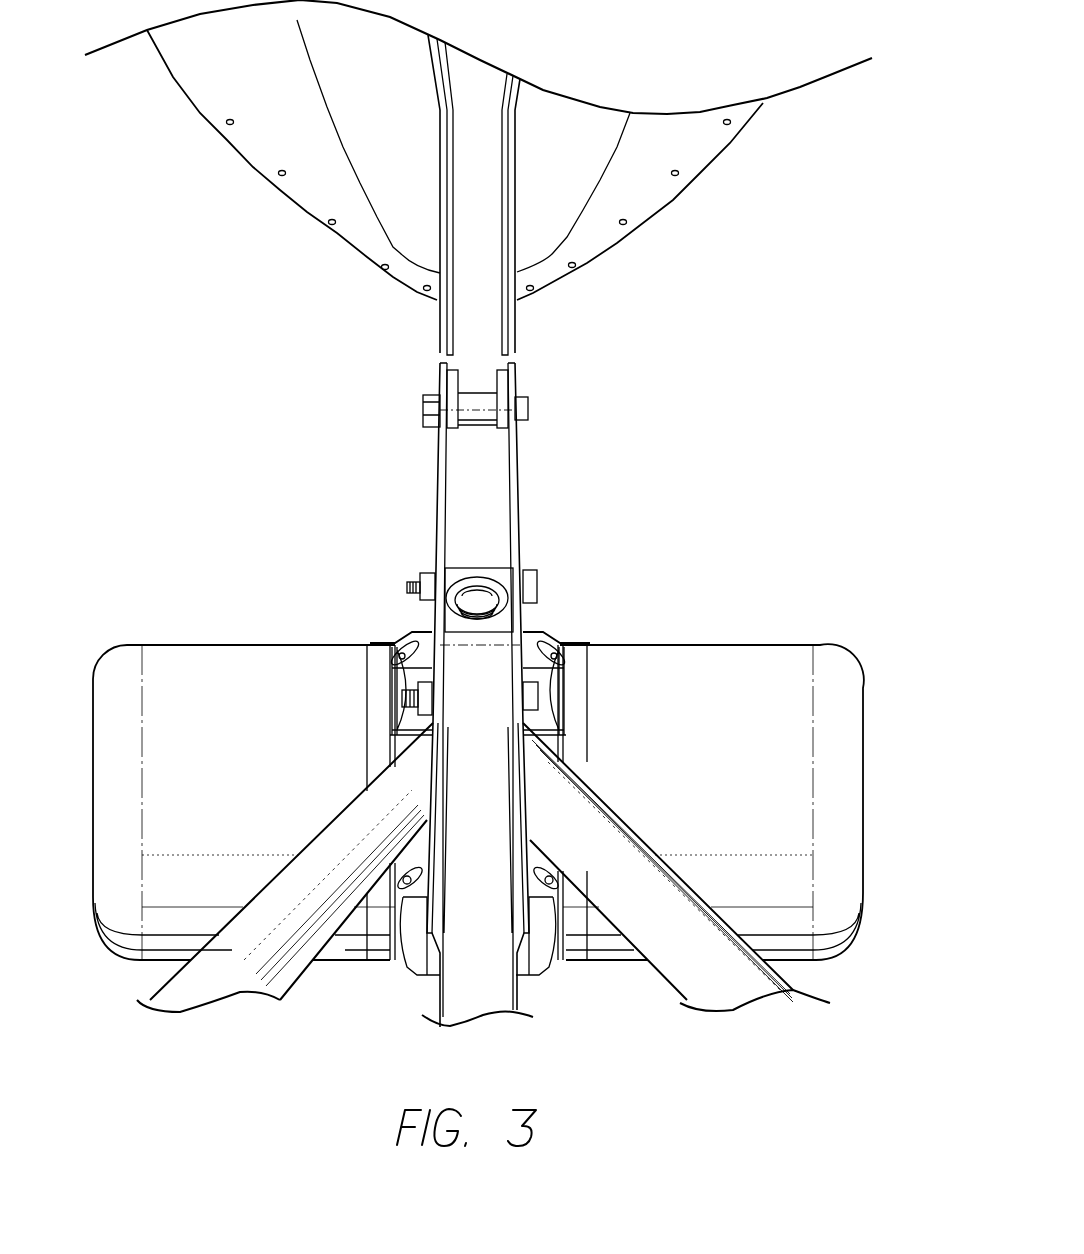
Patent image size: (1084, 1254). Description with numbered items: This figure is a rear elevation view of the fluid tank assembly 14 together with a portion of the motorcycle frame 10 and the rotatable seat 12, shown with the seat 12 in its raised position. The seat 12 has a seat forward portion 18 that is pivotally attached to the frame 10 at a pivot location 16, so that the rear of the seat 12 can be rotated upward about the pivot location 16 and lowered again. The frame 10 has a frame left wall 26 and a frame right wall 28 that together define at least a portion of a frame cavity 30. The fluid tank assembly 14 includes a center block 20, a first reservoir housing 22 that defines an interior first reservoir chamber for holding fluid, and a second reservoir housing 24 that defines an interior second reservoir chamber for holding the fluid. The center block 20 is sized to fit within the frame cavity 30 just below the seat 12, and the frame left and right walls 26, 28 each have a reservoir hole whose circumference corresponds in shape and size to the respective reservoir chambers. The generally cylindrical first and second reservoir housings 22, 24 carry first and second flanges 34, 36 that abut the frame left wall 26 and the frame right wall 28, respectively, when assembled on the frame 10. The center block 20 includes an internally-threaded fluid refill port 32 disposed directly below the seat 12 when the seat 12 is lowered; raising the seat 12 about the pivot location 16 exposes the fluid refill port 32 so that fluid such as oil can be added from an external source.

The motorcycle frame 10 is at (688, 963).
The rotatable seat 12 is at (262, 123).
The fluid tank assembly 14 is at (560, 647).
The pivot location 16 is at (487, 403).
The seat forward portion 18 is at (453, 325).
The center block 20 is at (470, 645).
The first reservoir housing 22 is at (168, 673).
The second reservoir housing 24 is at (825, 680).
The frame left wall 26 is at (443, 520).
The frame right wall 28 is at (517, 520).
The frame cavity 30 is at (457, 565).
The fluid refill port 32 is at (477, 600).
The first flange 34 is at (408, 918).
The second flange 36 is at (543, 918).